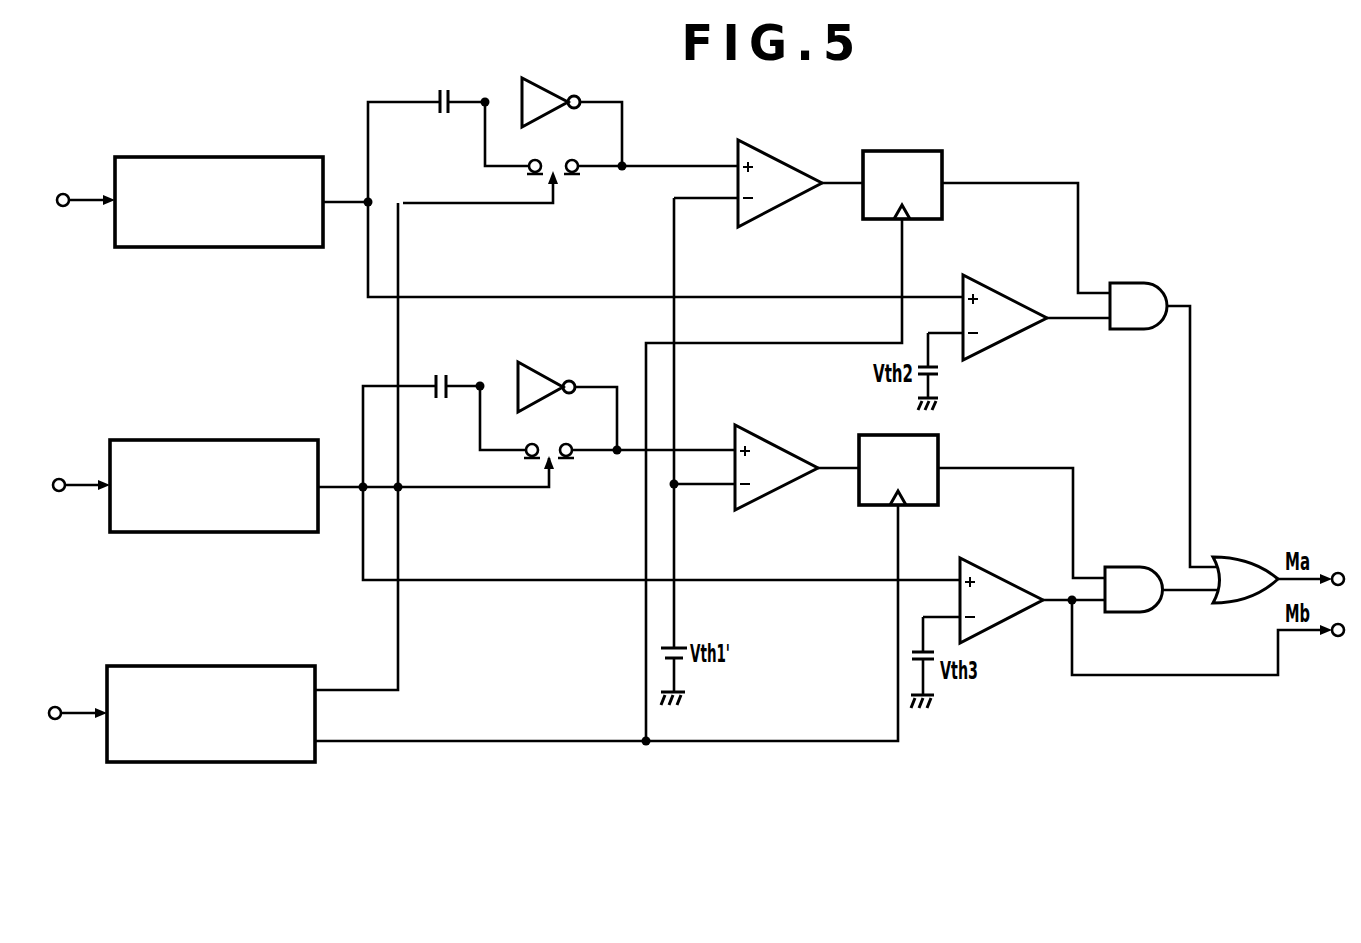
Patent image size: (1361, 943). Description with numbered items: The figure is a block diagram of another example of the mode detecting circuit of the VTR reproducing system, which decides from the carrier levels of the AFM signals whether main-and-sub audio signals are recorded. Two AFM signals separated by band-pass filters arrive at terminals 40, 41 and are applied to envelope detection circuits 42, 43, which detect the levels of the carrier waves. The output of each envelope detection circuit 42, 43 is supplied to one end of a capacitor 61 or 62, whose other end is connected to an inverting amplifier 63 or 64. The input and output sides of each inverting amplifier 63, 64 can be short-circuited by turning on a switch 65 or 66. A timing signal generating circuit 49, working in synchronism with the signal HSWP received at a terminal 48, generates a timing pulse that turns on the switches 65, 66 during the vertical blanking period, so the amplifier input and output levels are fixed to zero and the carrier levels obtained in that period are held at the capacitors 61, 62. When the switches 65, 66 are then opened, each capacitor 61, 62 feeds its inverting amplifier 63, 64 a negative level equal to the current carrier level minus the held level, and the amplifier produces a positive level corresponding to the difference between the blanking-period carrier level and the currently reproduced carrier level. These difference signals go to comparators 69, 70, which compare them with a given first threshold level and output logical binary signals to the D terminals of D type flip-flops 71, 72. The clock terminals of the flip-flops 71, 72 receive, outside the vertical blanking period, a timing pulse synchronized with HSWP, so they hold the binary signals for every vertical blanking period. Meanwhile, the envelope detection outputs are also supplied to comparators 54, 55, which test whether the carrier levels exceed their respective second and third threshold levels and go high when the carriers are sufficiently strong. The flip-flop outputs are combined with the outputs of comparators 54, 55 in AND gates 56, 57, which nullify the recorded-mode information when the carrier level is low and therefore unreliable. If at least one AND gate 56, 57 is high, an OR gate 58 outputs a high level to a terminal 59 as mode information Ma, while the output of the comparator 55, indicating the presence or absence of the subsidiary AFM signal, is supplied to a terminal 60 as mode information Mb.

The terminal 40 is at (63, 194).
The terminal 41 is at (59, 479).
The envelope detection circuit 42 is at (293, 157).
The envelope detection circuit 43 is at (287, 440).
The terminal 48 is at (56, 706).
The timing signal generating circuit 49 is at (284, 666).
The comparator 54 is at (1018, 302).
The comparator 55 is at (1013, 584).
The AND gate 56 is at (1148, 283).
The AND gate 57 is at (1143, 567).
The OR gate 58 is at (1265, 557).
The terminal 59 is at (1343, 572).
The terminal 60 is at (1342, 637).
The capacitor 61 is at (447, 87).
The capacitor 62 is at (445, 375).
The inverting amplifier 63 is at (547, 78).
The inverting amplifier 64 is at (544, 375).
The switch 65 is at (568, 178).
The switch 66 is at (563, 462).
The comparator 69 is at (789, 165).
The comparator 70 is at (785, 451).
The D type flip-flop 71 is at (925, 151).
The D type flip-flop 72 is at (941, 448).